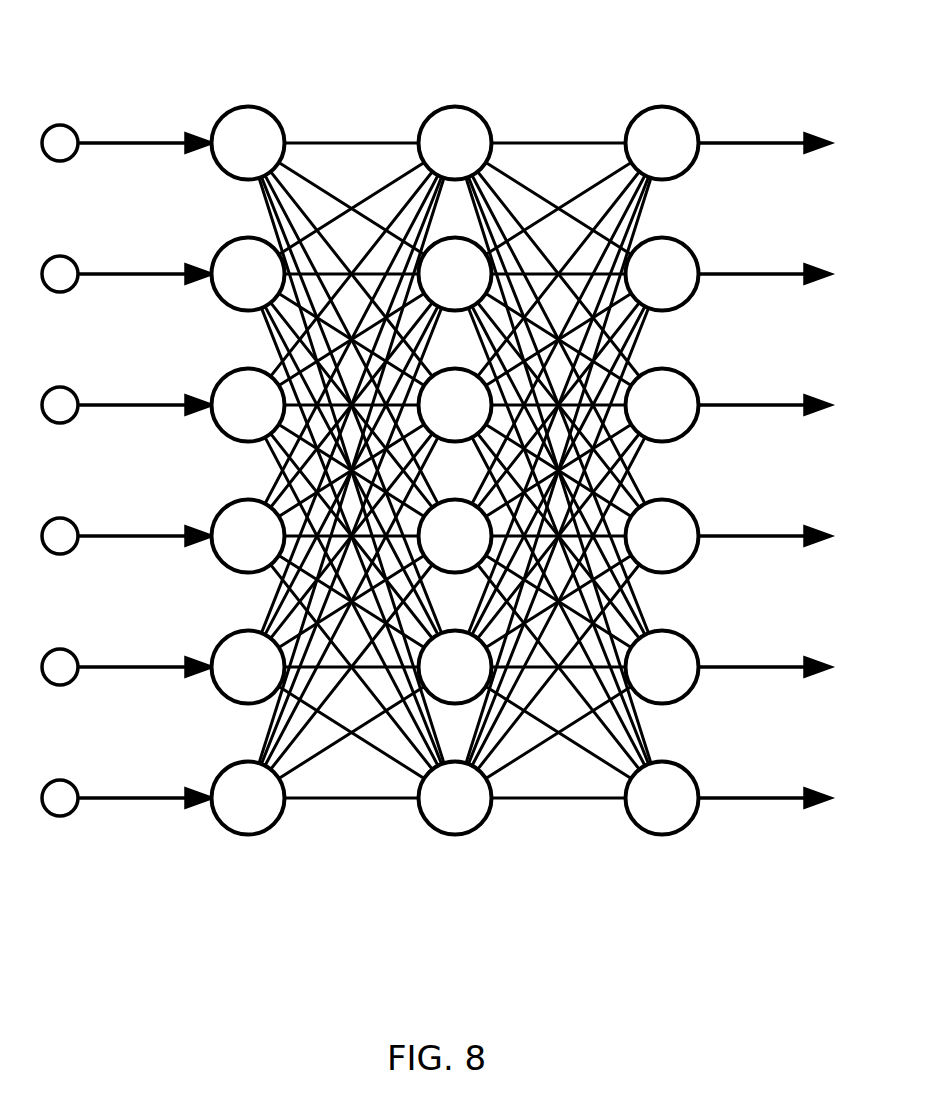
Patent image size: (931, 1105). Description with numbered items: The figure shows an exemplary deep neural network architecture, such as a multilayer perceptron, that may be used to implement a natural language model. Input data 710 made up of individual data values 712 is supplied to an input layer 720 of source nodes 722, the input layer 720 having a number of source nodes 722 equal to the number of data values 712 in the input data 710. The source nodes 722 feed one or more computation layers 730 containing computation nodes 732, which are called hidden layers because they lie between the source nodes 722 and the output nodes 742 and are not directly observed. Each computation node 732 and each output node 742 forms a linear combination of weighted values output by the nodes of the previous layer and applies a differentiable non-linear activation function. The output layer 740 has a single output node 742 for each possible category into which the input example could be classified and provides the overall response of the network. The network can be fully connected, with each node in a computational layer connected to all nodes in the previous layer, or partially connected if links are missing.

The input data 710 is at (68, 92).
The data values 712 is at (60, 808).
The input layer 720 is at (254, 72).
The source nodes 722 is at (248, 823).
The computation layer 730 is at (459, 72).
The computation nodes 732 is at (455, 823).
The output layer 740 is at (667, 72).
The output node 742 is at (662, 823).